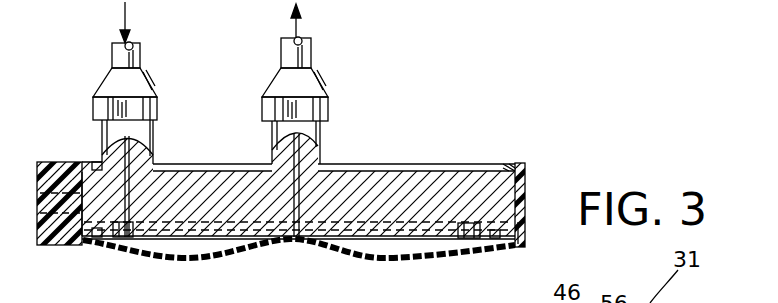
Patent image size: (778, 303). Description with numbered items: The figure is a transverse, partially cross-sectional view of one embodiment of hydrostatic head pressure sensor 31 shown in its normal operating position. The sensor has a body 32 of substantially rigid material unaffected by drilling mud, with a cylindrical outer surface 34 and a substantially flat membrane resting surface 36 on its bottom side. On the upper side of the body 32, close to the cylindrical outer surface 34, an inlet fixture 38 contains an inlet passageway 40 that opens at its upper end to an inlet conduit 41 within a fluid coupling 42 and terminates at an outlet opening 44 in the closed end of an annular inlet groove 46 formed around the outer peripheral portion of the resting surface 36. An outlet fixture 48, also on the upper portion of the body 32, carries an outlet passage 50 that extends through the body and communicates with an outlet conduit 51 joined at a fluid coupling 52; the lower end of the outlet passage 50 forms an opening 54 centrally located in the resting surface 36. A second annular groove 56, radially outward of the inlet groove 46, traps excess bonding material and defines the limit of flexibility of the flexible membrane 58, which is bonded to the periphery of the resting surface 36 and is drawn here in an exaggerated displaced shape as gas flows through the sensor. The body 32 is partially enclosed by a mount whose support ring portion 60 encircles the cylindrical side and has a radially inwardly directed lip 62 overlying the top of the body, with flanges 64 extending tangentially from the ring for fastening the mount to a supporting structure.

The pressure sensor 31 is at (440, 103).
The body 32 is at (204, 180).
The cylindrical outer surface 34 is at (526, 190).
The membrane resting surface 36 is at (216, 238).
The inlet fixture 38 is at (103, 130).
The inlet passageway 40 is at (112, 148).
The inlet conduit 41 is at (114, 50).
The fluid coupling 42 is at (112, 84).
The outlet opening 44 is at (117, 245).
The annular inlet groove 46 is at (457, 248).
The outlet fixture 48 is at (321, 135).
The outlet passage 50 is at (322, 167).
The outlet conduit 51 is at (309, 58).
The fluid coupling 52 is at (313, 88).
The opening 54 is at (295, 243).
The second annular groove 56 is at (497, 240).
The flexible membrane 58 is at (383, 253).
The support ring portion 60 is at (524, 226).
The lip 62 is at (505, 171).
The flanges 64 is at (59, 232).